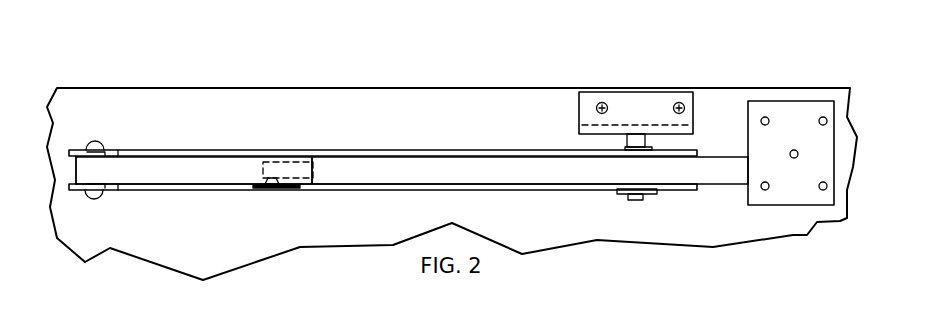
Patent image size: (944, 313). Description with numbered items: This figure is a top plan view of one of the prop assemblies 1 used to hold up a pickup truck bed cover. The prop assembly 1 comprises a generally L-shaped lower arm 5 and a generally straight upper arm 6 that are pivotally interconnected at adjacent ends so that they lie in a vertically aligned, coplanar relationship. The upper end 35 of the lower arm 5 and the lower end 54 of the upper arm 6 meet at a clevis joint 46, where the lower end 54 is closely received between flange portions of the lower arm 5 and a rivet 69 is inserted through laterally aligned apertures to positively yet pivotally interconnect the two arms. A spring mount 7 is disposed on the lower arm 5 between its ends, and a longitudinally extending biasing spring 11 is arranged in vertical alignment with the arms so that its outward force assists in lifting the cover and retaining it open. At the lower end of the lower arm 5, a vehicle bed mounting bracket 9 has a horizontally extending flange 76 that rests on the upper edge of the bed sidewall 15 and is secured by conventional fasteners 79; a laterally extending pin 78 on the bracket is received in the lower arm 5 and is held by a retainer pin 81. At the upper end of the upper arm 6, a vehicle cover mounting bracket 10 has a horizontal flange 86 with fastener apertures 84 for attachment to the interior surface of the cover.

The prop assembly 1 is at (93, 130).
The lower arm 5 is at (163, 150).
The upper arm 6 is at (186, 177).
The spring mount 7 is at (283, 190).
The vehicle bed mounting bracket 9 is at (623, 91).
The vehicle cover mounting bracket 10 is at (783, 101).
The spring 11 is at (290, 150).
The sidewall 15 is at (783, 229).
The upper end of lower arm 35 is at (68, 188).
The clevis joint 46 is at (110, 205).
The lower end of upper arm 54 is at (90, 172).
The rivet 69 is at (102, 144).
The horizontally extending flange 76 is at (645, 100).
The pin 78 is at (630, 200).
The fasteners 79 is at (598, 103).
The retainer pin 81 is at (650, 198).
The fastener apertures 84 is at (765, 192).
The horizontal flange 86 is at (755, 136).